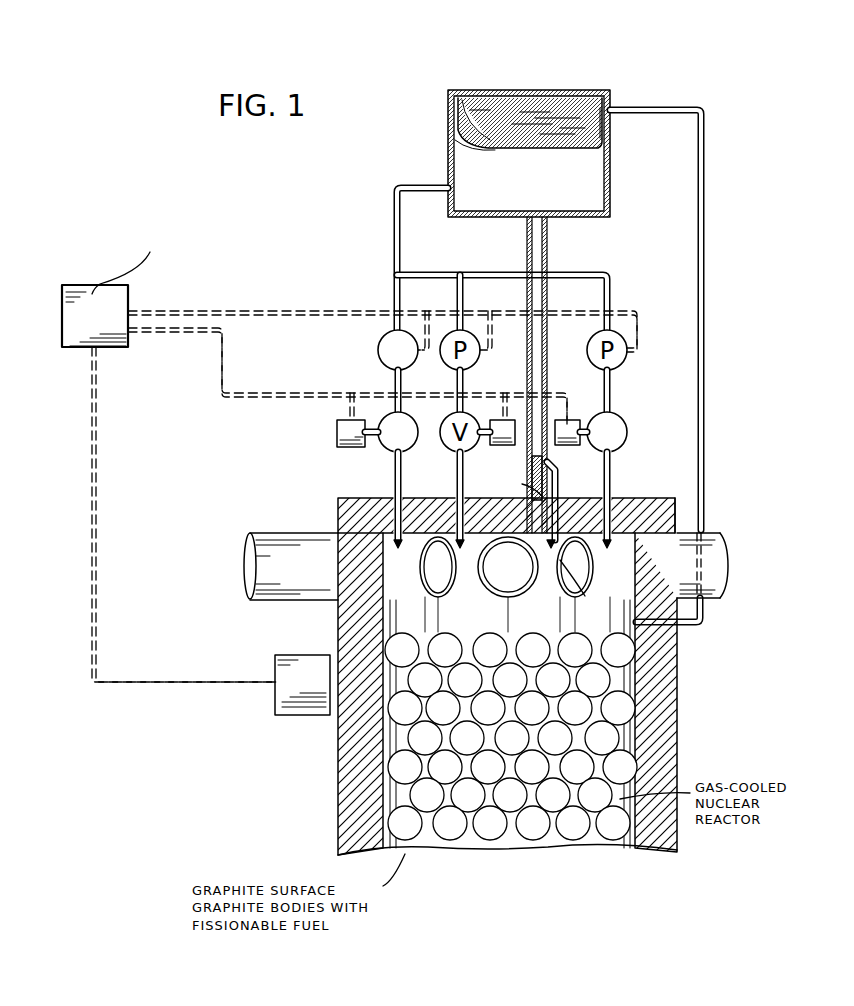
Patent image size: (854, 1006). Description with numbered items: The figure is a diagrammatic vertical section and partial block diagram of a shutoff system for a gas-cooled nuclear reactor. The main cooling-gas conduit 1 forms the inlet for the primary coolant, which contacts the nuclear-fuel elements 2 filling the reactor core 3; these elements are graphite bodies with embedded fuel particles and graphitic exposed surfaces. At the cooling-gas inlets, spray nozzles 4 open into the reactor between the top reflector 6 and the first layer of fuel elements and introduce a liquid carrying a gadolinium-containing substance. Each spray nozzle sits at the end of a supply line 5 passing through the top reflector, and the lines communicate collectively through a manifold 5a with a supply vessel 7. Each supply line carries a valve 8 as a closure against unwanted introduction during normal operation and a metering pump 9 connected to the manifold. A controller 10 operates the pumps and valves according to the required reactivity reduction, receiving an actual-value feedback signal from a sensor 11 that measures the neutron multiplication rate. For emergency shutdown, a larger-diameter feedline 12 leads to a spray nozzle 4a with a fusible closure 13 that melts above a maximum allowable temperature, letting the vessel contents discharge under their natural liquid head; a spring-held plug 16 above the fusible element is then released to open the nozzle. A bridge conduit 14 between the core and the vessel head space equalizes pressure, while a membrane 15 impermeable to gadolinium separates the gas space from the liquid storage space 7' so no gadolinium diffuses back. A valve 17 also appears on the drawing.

The main cooling-gas conduit 1 is at (275, 579).
The nuclear-fuel elements 2 is at (410, 775).
The reactor core 3 is at (408, 678).
The spray nozzles 4 is at (385, 527).
The spray nozzle 4a is at (583, 591).
The supply line 5 is at (396, 478).
The manifold 5a is at (396, 218).
The top reflector 6 is at (663, 505).
The supply vessel 7 is at (530, 99).
The liquid storage space 7' is at (445, 143).
The valve 8 is at (388, 421).
The metering pump 9 is at (382, 335).
The controller 10 is at (102, 296).
The sensor 11 is at (290, 690).
The feedline 12 is at (526, 264).
The fusible closure 13 is at (558, 496).
The bridge conduit 14 is at (655, 110).
The membrane 15 is at (448, 108).
The plug 16 is at (578, 421).
The valve 17 is at (612, 456).